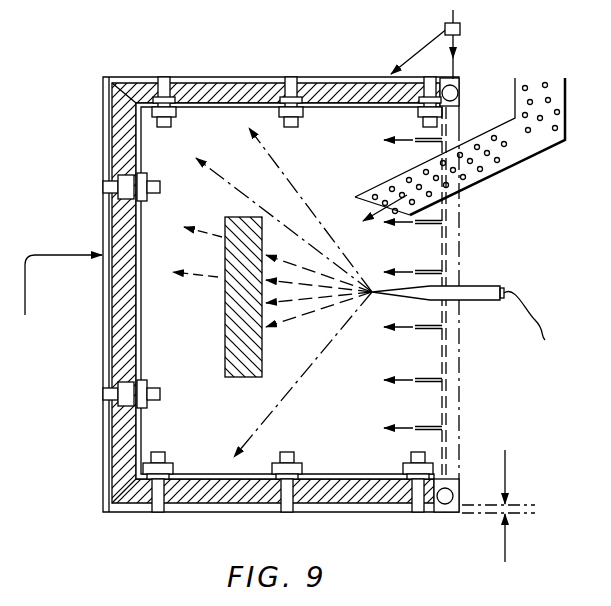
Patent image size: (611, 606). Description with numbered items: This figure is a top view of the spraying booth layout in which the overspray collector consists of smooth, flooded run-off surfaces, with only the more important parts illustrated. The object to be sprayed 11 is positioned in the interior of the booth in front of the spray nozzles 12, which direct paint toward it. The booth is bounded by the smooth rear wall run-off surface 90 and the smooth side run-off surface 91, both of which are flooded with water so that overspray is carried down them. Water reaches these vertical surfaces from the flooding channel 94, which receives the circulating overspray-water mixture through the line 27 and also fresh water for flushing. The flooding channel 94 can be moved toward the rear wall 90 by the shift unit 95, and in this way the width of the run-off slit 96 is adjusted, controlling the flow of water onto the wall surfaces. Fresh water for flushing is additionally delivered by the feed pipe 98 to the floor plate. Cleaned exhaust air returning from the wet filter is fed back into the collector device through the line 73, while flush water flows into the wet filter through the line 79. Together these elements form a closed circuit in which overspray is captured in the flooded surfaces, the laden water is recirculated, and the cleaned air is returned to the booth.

The object to be sprayed 11 is at (222, 370).
The spray nozzles 12 is at (480, 286).
The line 27 is at (55, 258).
The line 73 is at (530, 158).
The line 79 is at (418, 52).
The rear wall run-off surface 90 is at (104, 158).
The side run-off surface 91 is at (312, 78).
The flooding channel 94 is at (128, 118).
The shift unit 95 is at (287, 83).
The run-off slit 96 is at (102, 452).
The feed pipe 98 is at (459, 380).